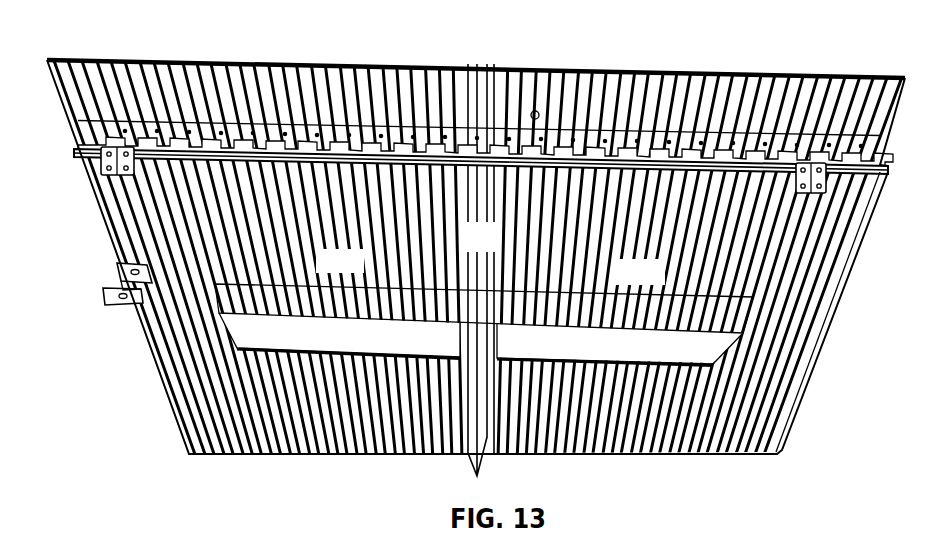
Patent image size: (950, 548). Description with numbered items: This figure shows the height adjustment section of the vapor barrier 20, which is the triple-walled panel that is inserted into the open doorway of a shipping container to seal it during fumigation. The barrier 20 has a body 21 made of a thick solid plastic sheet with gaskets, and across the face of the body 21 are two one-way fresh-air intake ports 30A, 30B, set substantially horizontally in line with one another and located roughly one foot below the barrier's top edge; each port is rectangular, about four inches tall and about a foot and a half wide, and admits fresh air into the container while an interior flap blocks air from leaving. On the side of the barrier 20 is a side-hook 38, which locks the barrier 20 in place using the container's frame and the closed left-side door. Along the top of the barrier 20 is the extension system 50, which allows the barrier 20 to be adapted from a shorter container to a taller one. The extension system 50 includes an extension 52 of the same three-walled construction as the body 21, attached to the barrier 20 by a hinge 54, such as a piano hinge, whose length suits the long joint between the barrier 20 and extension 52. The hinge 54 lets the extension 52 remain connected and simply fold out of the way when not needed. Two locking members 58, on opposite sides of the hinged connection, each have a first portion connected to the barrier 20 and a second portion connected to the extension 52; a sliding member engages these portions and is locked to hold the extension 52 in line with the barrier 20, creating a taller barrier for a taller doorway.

The vapor barrier 20 is at (466, 239).
The extension system 50 is at (212, 78).
The extension 52 is at (483, 84).
The hinge 54 is at (77, 132).
The locking member 58 is at (101, 168).
The side-hook 38 is at (104, 301).
The body 21 is at (496, 249).
The one-way fresh-air intake port 30A is at (318, 328).
The one-way fresh-air intake port 30B is at (617, 337).